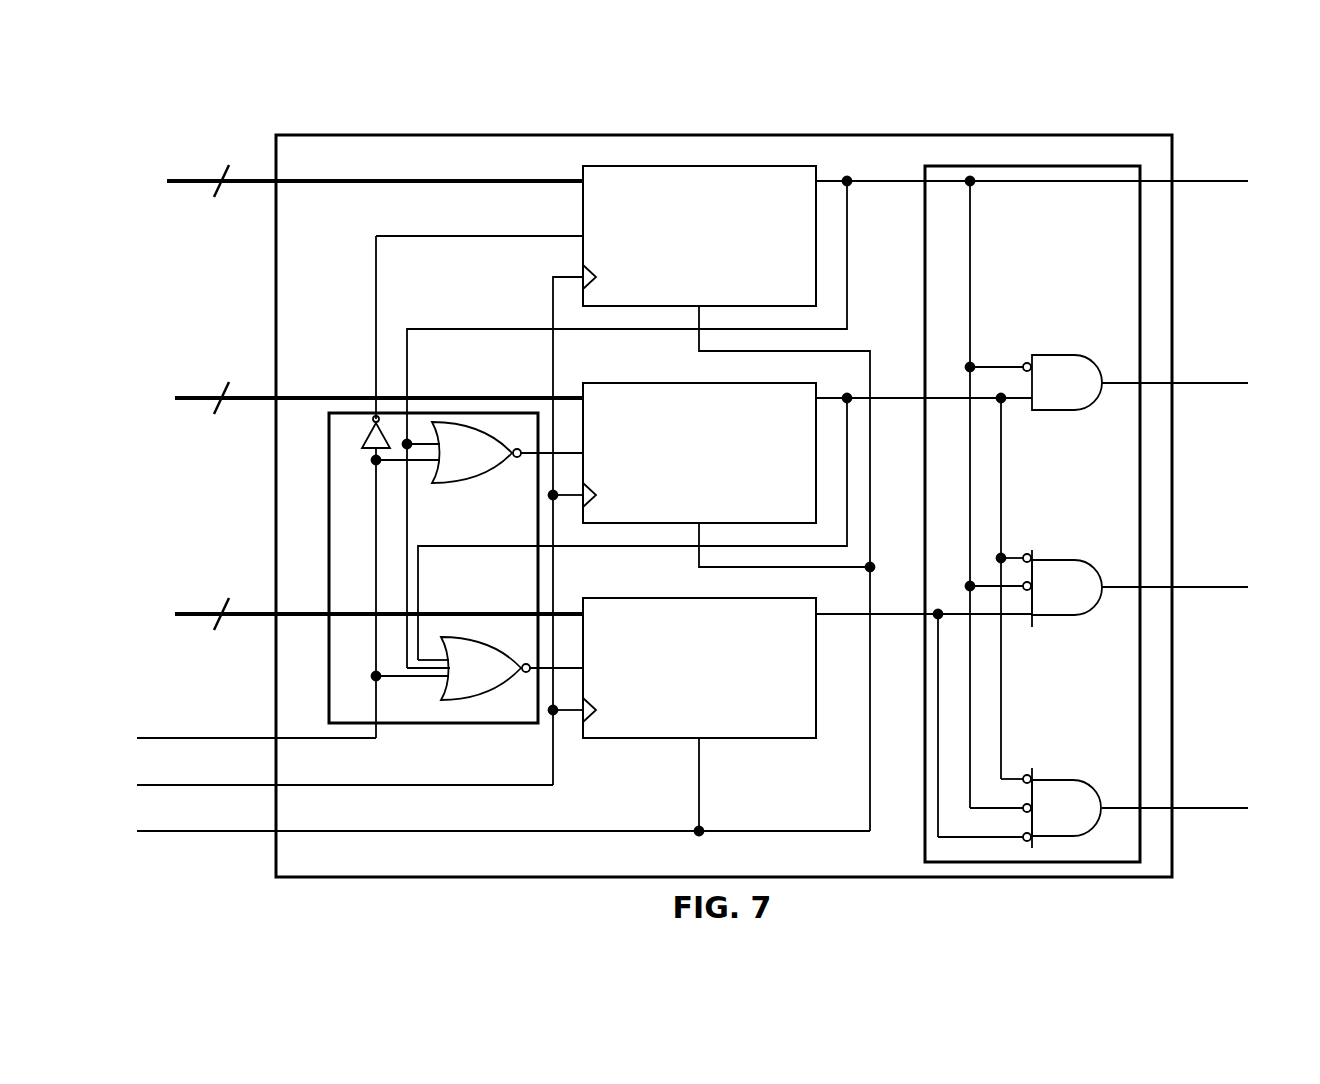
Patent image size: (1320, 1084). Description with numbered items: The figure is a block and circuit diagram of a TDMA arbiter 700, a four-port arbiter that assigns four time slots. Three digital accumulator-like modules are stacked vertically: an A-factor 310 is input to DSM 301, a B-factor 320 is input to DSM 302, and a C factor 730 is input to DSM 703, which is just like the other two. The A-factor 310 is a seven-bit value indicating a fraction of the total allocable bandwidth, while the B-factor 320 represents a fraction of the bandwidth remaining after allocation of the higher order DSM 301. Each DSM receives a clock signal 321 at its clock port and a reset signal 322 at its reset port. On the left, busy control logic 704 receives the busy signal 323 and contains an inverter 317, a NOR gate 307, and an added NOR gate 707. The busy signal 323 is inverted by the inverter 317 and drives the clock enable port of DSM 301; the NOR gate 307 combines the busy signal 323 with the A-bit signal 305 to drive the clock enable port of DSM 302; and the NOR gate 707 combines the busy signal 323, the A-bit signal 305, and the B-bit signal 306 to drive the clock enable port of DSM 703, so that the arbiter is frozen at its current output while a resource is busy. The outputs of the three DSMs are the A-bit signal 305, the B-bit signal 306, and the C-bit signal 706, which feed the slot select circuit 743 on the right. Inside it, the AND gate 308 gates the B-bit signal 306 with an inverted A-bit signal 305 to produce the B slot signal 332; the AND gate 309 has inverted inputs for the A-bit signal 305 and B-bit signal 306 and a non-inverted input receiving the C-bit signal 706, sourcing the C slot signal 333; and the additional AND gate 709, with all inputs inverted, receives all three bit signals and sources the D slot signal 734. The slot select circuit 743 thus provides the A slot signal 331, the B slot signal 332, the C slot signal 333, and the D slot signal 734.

The TDMA arbiter 700 is at (1178, 108).
The A-factor 310 is at (192, 188).
The B-factor 320 is at (192, 405).
The C factor 730 is at (192, 621).
The DSM 301 is at (683, 258).
The DSM 302 is at (740, 494).
The DSM 703 is at (683, 691).
The A-bit signal 305 is at (878, 188).
The B-bit signal 306 is at (888, 405).
The C-bit signal 706 is at (888, 621).
The NOR gate 307 is at (454, 463).
The NOR gate 707 is at (464, 678).
The inverter 317 is at (362, 446).
The busy control logic 704 is at (328, 521).
The AND gate 308 is at (1049, 393).
The AND gate 309 is at (1049, 597).
The AND gate 709 is at (1049, 817).
The slot select circuit 743 is at (923, 848).
The A slot signal 331 is at (1202, 185).
The B slot signal 332 is at (1202, 387).
The C slot signal 333 is at (1202, 591).
The D slot signal 734 is at (1218, 812).
The busy signal 323 is at (205, 742).
The clock signal 321 is at (205, 789).
The reset signal 322 is at (205, 835).